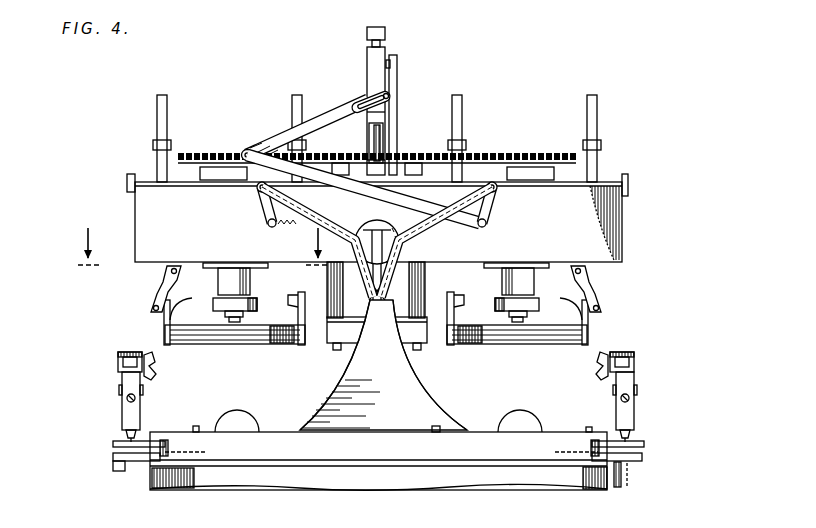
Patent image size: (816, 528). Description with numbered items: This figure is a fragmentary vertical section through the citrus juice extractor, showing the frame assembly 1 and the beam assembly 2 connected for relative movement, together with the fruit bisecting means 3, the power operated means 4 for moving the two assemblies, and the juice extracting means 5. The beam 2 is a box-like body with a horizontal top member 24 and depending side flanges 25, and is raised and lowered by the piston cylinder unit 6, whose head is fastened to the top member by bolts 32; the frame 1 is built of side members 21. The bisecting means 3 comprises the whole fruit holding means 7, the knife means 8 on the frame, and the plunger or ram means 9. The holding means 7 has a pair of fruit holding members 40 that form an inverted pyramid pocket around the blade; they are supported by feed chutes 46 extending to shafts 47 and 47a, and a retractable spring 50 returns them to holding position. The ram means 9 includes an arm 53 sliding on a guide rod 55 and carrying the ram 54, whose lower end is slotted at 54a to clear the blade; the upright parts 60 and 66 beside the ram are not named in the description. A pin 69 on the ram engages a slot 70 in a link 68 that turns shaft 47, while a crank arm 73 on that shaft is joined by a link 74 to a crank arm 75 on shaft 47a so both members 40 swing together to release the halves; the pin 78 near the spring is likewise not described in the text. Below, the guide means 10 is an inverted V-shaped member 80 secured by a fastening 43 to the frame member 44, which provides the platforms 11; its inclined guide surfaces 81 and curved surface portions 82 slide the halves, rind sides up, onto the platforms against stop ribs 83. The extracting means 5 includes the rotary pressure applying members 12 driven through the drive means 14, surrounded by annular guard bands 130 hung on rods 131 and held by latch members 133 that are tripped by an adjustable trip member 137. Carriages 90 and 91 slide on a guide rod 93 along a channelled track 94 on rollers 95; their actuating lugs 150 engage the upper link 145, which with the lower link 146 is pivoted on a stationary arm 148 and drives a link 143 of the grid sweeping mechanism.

The frame assembly 1 is at (591, 482).
The beam assembly 2 is at (621, 213).
The fruit bisecting means 3 is at (396, 264).
The power operated means 4 is at (428, 338).
The juice extracting means 5 is at (206, 348).
The piston cylinder unit 6 is at (425, 286).
The whole fruit holding means 7 is at (351, 272).
The knife means 8 is at (369, 280).
The plunger or ram means 9 is at (392, 108).
The guide means 10 is at (453, 389).
The platforms 11 is at (199, 430).
The rotary pressure applying members 12 is at (254, 342).
The drive means 14 is at (538, 152).
The side members 21 is at (152, 479).
The top member 24 is at (611, 180).
The side flanges 25 is at (619, 241).
The bolts 32 is at (332, 343).
The fruit holding members 40 is at (401, 244).
The fastening 43 is at (434, 432).
The frame member 44 is at (482, 433).
The feed chutes 46 is at (333, 208).
The shaft 47 is at (260, 194).
The shaft 47a is at (499, 194).
The retractable spring 50 is at (283, 232).
The arm 53 is at (368, 58).
The plunger or ram 54 is at (369, 135).
The slot 54a is at (381, 133).
The guide rod 55 is at (386, 41).
The rod 60 is at (397, 80).
The bracket 66 is at (391, 64).
The link 68 is at (314, 118).
The pin 69 is at (372, 100).
The slot 70 is at (356, 110).
The crank arm 73 is at (250, 177).
The link 74 is at (385, 200).
The crank arm 75 is at (489, 224).
The pin 78 is at (268, 226).
The inverted V-shaped member 80 is at (383, 365).
The inclined guide surfaces 81 is at (401, 332).
The curved surface portions 82 is at (323, 401).
The stop ribs 83 is at (193, 430).
The carriage 90 is at (636, 386).
The carriage 91 is at (121, 402).
The guide rod 93 is at (621, 399).
The channelled track 94 is at (630, 350).
The rollers 95 is at (118, 365).
The annular guard bands 130 is at (168, 332).
The rods 131 is at (167, 110).
The latch member 133 is at (152, 283).
The adjustable trip member 137 is at (606, 368).
The link 143 is at (122, 466).
The upper link 145 is at (125, 447).
The lower link 146 is at (116, 456).
The stationary arm 148 is at (592, 449).
The actuating lug 150 is at (636, 440).